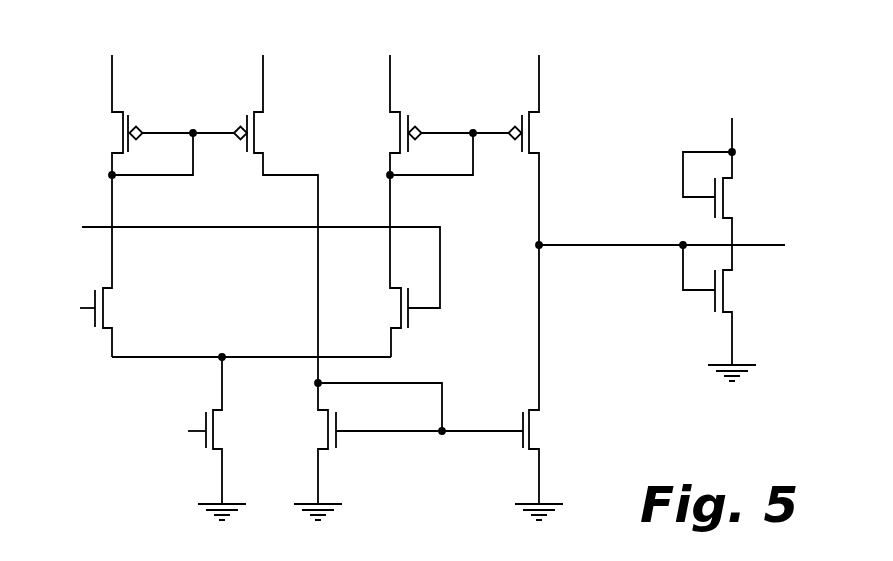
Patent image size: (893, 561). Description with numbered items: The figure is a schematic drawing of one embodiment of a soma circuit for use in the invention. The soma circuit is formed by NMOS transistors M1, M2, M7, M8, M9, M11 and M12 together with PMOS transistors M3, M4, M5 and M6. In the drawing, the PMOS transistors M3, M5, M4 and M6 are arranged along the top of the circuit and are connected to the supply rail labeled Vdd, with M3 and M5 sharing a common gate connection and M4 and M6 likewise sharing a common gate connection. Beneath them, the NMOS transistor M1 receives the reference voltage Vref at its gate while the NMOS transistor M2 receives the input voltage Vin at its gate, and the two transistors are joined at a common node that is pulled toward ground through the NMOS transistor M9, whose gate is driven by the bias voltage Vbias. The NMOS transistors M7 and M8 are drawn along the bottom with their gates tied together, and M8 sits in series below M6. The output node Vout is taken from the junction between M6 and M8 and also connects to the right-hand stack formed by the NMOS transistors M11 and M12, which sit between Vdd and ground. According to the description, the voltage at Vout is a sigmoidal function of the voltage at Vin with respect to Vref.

The NMOS transistor M1 is at (121, 266).
The NMOS transistor M2 is at (385, 266).
The PMOS transistor M3 is at (139, 115).
The PMOS transistor M4 is at (415, 115).
The PMOS transistor M5 is at (255, 219).
The PMOS transistor M6 is at (520, 150).
The NMOS transistor M7 is at (405, 451).
The NMOS transistor M8 is at (544, 382).
The NMOS transistor M9 is at (224, 438).
The NMOS transistor M11 is at (731, 181).
The NMOS transistor M12 is at (731, 313).
The supply voltage Vdd is at (132, 55).
The input voltage Vin is at (240, 262).
The reference voltage Vref is at (65, 309).
The bias voltage Vbias is at (170, 433).
The output voltage Vout is at (684, 245).